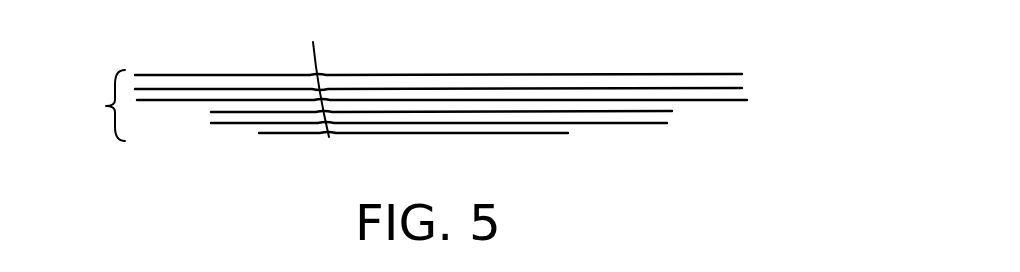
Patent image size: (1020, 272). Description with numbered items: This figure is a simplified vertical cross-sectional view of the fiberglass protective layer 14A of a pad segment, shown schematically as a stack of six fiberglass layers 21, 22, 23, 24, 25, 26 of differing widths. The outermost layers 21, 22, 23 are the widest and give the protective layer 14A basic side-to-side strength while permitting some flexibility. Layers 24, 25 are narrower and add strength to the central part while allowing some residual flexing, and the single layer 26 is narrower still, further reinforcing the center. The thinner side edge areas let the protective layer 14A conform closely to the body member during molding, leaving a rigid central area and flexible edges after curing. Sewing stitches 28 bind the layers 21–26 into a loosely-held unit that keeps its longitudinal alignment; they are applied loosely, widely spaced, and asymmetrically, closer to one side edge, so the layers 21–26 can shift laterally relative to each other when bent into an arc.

The fiberglass protective layer 14A is at (439, 116).
The fiberglass layer 21 is at (742, 74).
The fiberglass layer 22 is at (742, 88).
The fiberglass layer 23 is at (747, 100).
The fiberglass layer 24 is at (672, 111).
The fiberglass layer 25 is at (667, 123).
The fiberglass layer 26 is at (568, 133).
The sewing stitches 28 is at (315, 75).